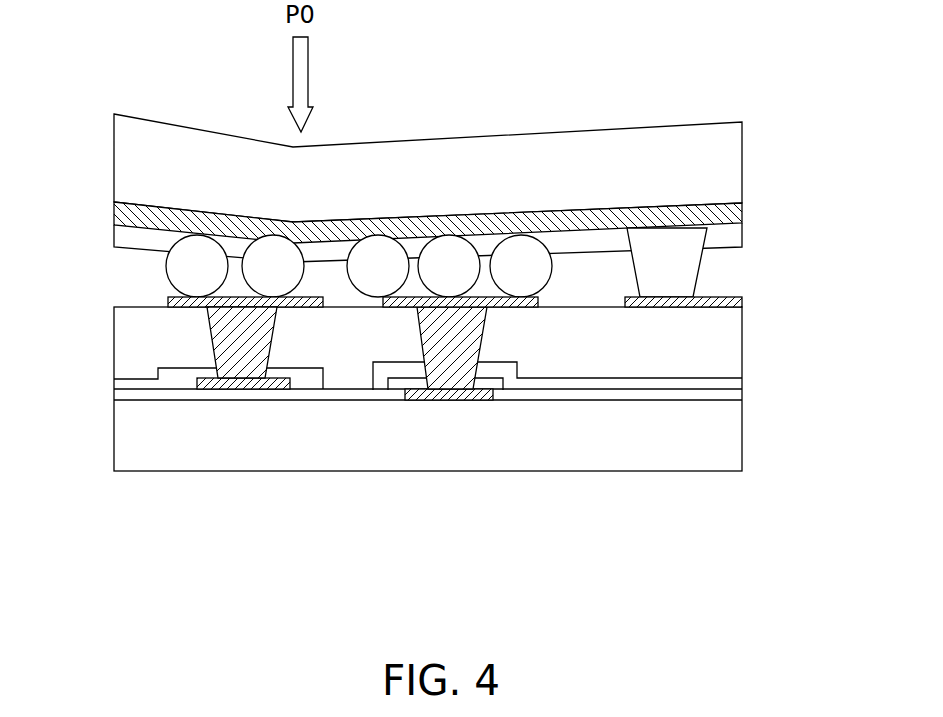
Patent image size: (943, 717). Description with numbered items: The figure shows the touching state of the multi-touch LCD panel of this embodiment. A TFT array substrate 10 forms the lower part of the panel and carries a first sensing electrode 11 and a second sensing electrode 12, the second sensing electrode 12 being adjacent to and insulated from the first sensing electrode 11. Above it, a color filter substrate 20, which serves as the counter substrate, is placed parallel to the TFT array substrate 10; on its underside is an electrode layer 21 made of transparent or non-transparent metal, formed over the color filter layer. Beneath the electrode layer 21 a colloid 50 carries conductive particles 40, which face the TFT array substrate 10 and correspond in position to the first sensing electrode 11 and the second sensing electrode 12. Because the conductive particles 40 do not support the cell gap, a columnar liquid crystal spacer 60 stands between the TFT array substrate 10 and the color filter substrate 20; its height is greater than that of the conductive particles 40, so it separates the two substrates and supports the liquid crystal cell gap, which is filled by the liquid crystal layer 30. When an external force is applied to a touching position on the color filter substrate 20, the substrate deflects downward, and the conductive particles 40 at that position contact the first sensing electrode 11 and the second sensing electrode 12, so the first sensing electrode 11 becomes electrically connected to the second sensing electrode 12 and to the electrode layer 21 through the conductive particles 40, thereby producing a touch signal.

The TFT array substrate 10 is at (742, 432).
The first sensing electrode 11 is at (207, 307).
The second sensing electrode 12 is at (505, 307).
The color filter substrate 20 is at (742, 157).
The electrode layer 21 is at (742, 217).
The liquid crystal layer 30 is at (65, 358).
The conductive particles 40 is at (140, 272).
The colloid 50 is at (113, 252).
The liquid crystal spacer 60 is at (703, 273).